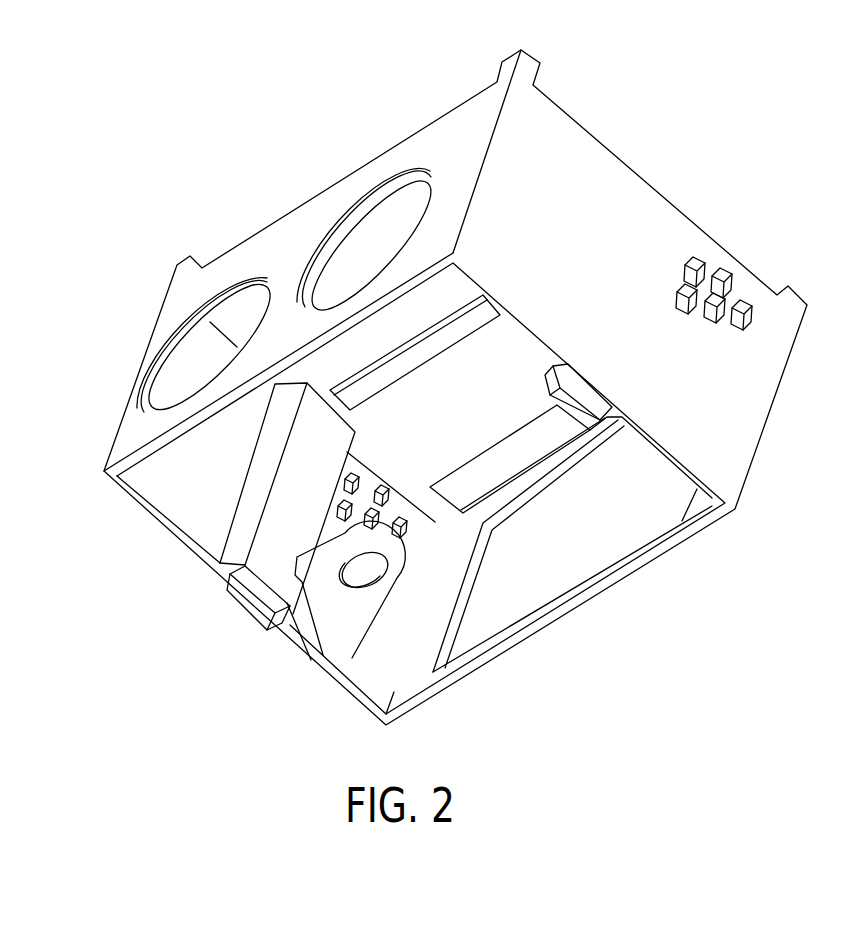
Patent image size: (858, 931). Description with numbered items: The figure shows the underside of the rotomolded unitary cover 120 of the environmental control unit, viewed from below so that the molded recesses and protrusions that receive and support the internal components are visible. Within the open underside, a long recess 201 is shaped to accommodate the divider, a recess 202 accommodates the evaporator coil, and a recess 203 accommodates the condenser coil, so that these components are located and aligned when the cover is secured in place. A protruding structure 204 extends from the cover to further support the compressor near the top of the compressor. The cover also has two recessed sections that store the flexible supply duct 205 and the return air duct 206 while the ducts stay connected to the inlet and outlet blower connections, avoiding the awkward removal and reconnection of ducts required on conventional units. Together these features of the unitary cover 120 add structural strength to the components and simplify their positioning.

The unitary cover 120 is at (469, 120).
The recess 201 is at (397, 367).
The recess 202 is at (395, 205).
The recess 203 is at (510, 452).
The protruding structure 204 is at (358, 597).
The flexible supply duct 205 is at (330, 237).
The return air duct 206 is at (165, 335).